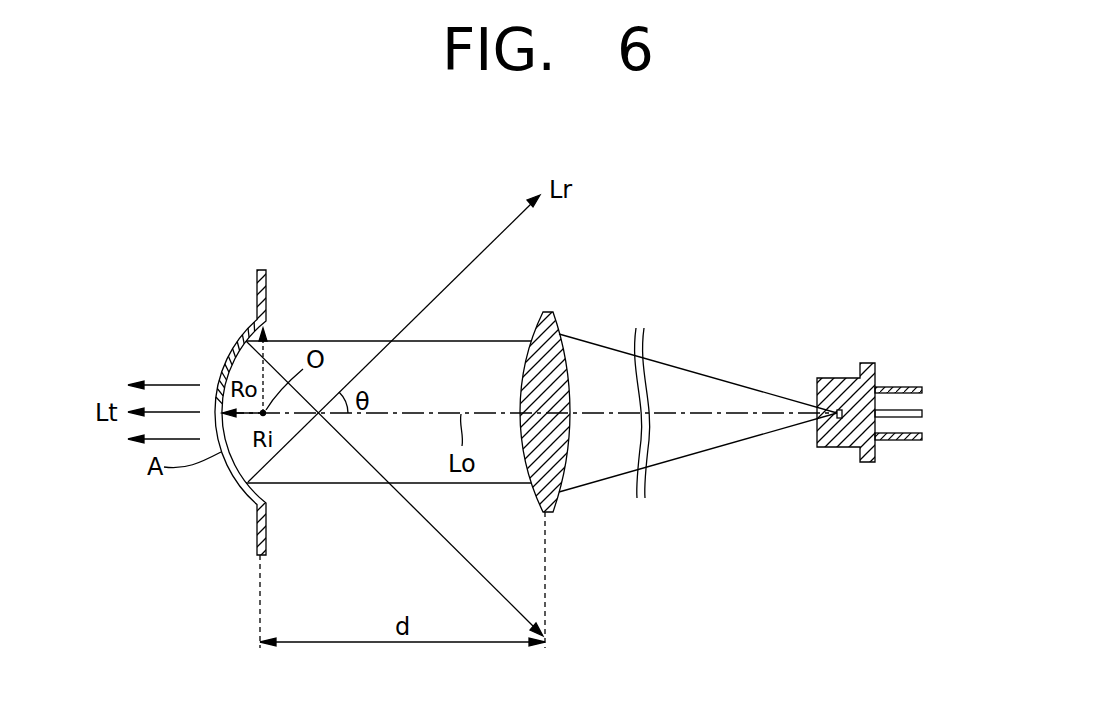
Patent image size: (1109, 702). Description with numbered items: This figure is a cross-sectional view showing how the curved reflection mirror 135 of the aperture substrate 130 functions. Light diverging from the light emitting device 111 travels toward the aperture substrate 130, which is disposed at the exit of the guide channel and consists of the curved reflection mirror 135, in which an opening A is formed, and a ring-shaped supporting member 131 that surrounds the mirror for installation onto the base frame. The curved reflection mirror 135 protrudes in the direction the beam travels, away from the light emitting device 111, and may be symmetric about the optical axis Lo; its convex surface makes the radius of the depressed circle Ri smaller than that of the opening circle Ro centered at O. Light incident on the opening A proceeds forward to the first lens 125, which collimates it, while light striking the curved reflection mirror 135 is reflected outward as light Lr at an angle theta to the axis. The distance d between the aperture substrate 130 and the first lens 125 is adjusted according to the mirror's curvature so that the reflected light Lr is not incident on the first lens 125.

The light emitting device 111 is at (866, 462).
The first lens 125 is at (552, 502).
The aperture substrate 130 is at (183, 418).
The ring-shaped supporting member 131 is at (256, 528).
The curved reflection mirror 135 is at (233, 468).